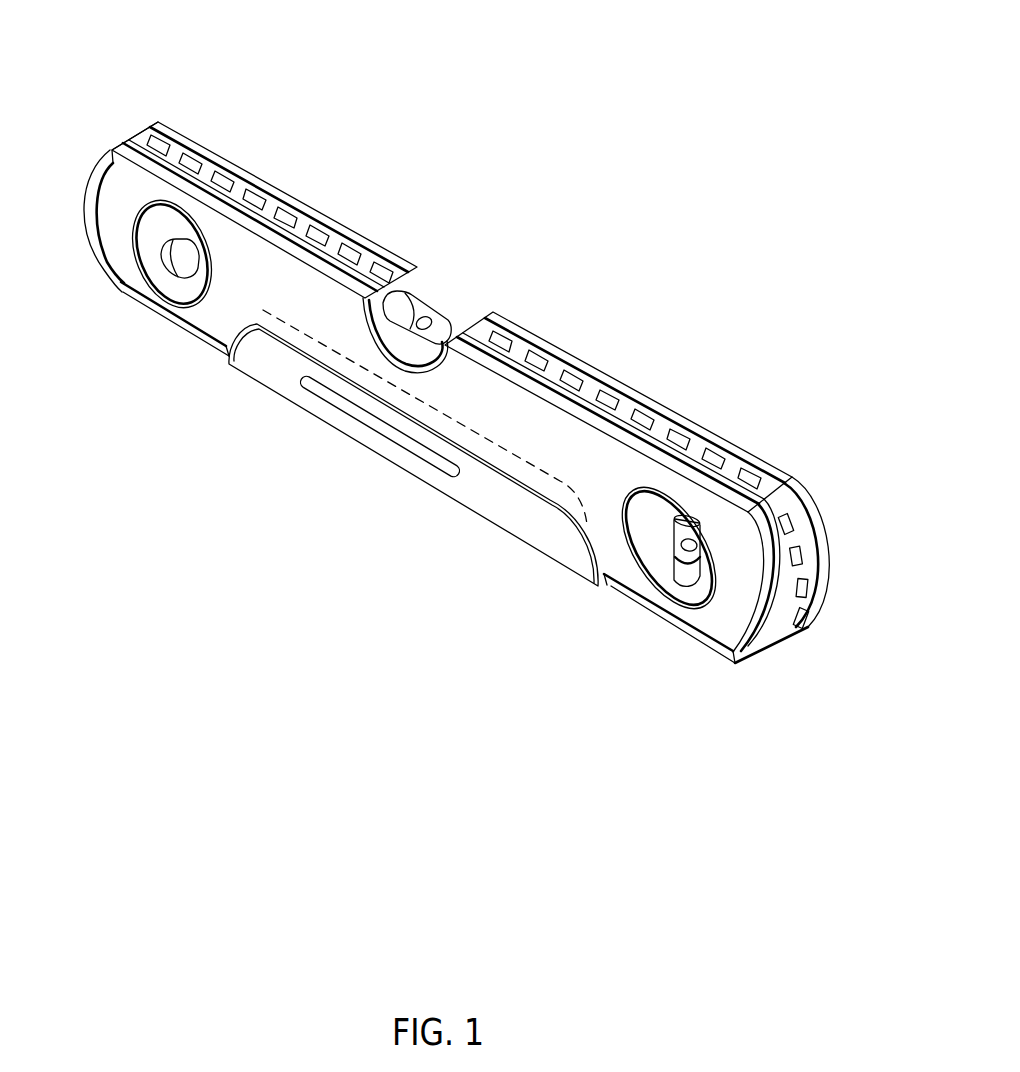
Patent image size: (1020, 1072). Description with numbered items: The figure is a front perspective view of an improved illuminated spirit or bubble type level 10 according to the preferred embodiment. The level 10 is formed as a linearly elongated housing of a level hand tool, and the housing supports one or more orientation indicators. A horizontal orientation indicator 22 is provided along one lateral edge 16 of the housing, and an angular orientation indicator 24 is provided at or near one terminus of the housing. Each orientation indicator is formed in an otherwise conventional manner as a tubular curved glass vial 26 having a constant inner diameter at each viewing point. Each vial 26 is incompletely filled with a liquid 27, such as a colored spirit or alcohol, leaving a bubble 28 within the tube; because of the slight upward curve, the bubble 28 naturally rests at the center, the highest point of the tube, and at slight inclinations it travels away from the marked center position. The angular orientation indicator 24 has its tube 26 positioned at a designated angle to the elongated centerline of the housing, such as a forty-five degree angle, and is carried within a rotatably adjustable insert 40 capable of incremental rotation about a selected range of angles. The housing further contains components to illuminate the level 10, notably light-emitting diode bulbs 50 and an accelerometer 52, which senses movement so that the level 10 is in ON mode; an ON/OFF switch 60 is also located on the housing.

The level 10 is at (522, 153).
The lateral edge 16 is at (806, 521).
The horizontal orientation indicator 22 is at (400, 347).
The angular orientation indicator 24 is at (140, 322).
The tubular curved glass vial 26 is at (414, 302).
The liquid 27 is at (681, 535).
The bubble 28 is at (431, 320).
The rotatably adjustable insert 40 is at (175, 210).
The light-emitting diode (LED) bulbs 50 is at (510, 453).
The accelerometer 52 is at (757, 487).
The ON/OFF switch 60 is at (403, 447).